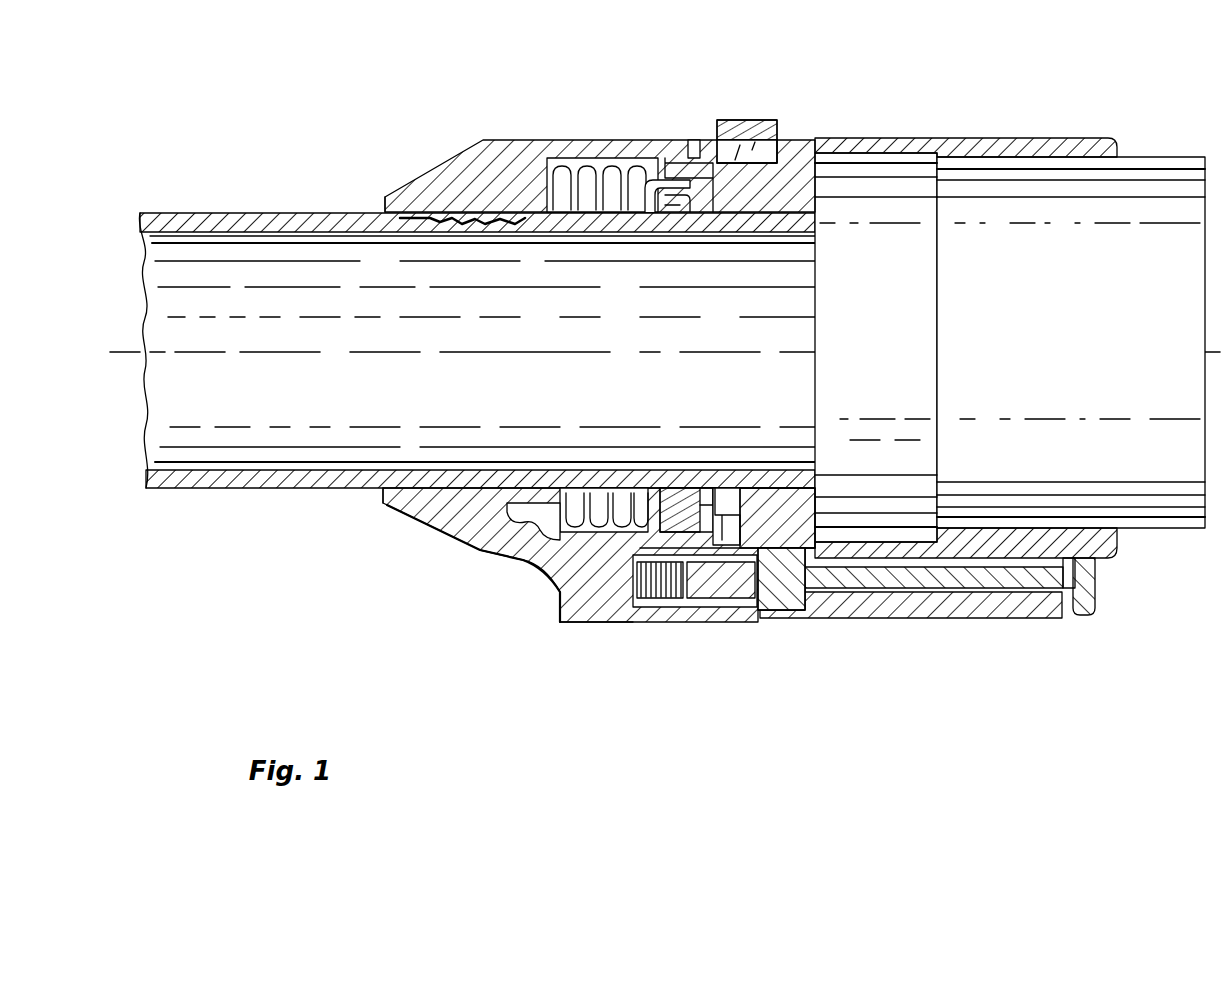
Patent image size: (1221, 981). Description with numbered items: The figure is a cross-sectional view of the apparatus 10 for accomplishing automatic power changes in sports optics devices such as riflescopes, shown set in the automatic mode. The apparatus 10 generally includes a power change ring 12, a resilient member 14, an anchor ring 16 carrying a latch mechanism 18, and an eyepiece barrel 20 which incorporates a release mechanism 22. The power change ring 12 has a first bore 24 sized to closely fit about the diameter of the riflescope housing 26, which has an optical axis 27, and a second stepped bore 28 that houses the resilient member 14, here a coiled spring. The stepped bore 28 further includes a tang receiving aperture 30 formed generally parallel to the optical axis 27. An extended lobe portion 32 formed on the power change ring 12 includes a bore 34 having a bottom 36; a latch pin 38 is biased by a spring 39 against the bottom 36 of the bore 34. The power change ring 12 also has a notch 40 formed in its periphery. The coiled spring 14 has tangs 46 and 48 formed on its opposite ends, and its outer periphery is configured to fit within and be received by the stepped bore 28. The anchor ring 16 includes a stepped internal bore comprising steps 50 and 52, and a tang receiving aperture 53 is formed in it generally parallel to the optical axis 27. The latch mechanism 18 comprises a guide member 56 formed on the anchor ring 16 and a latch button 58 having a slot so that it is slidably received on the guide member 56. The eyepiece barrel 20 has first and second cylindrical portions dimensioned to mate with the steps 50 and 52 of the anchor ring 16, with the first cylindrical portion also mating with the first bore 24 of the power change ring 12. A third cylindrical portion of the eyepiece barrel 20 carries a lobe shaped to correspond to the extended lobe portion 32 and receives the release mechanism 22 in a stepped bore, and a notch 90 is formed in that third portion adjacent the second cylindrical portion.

The apparatus 10 is at (420, 567).
The power change ring 12 is at (410, 536).
The resilient member 14 is at (560, 195).
The anchor ring 16 is at (680, 486).
The latch mechanism 18 is at (749, 118).
The eyepiece barrel 20 is at (1005, 135).
The release mechanism 22 is at (1100, 583).
The first bore 24 is at (410, 228).
The riflescope housing 26 is at (290, 488).
The axis 27 is at (1040, 342).
The second stepped bore 28 is at (587, 180).
The tang receiving aperture 30 is at (520, 512).
The extended lobe portion 32 is at (565, 575).
The bore 34 is at (800, 535).
The bottom 36 is at (603, 590).
The latch pin 38 is at (715, 580).
The spring 39 is at (662, 607).
The notch 40 is at (694, 140).
The tang 46 is at (537, 490).
The tang 48 is at (652, 205).
The step 50 is at (700, 488).
The step 52 is at (730, 500).
The tang receiving aperture 53 is at (682, 200).
The guide member 56 is at (772, 124).
The latch button 58 is at (722, 120).
The notch 90 is at (795, 140).